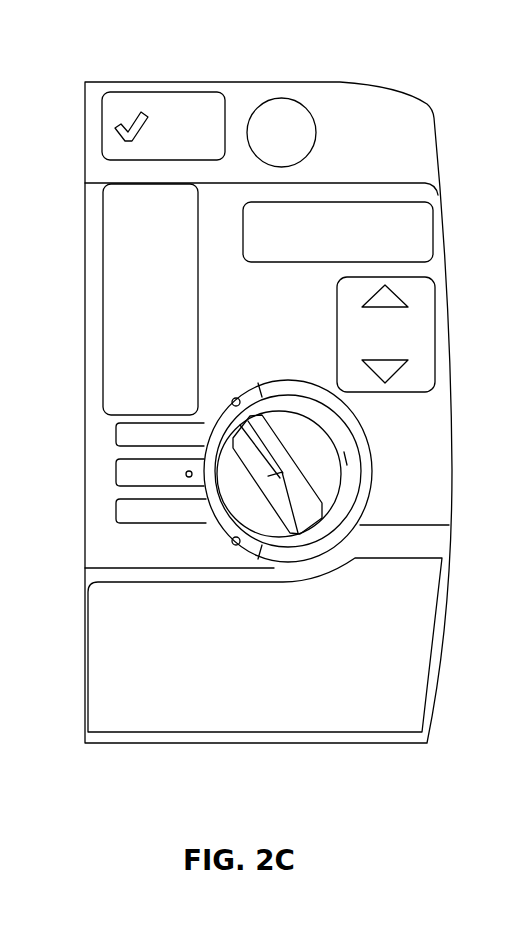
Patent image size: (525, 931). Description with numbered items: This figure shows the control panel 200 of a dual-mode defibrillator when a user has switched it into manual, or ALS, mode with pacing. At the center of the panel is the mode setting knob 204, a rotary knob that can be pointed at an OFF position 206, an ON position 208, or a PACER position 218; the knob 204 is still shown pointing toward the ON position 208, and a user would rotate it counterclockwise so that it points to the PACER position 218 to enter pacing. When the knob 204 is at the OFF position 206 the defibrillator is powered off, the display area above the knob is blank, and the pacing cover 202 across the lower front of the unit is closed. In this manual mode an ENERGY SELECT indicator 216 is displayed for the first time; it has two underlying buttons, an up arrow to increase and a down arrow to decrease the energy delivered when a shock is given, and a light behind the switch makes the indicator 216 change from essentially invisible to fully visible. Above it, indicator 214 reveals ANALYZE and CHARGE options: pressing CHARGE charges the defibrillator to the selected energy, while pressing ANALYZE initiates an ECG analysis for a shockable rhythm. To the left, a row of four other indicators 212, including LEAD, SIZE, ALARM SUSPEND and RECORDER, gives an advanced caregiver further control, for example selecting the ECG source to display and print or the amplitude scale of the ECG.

The defibrillator / control panel 200 is at (403, 96).
The pacing cover 202 is at (311, 708).
The mode setting knob 204 is at (340, 460).
The OFF position 206 is at (115, 470).
The ON button 208 is at (113, 433).
The row of four other indicators 212 is at (83, 184).
The indicator 214 is at (425, 232).
The ENERGY SELECT indicator 216 is at (422, 317).
The PACER button 218 is at (203, 527).